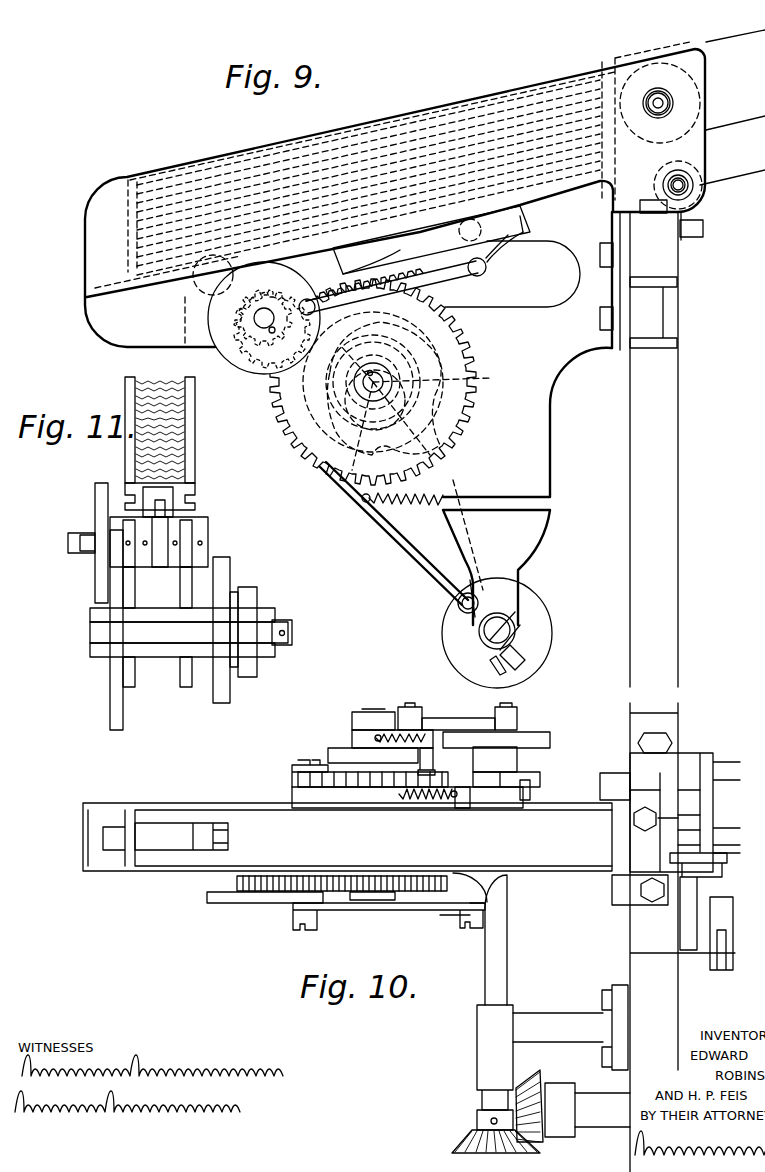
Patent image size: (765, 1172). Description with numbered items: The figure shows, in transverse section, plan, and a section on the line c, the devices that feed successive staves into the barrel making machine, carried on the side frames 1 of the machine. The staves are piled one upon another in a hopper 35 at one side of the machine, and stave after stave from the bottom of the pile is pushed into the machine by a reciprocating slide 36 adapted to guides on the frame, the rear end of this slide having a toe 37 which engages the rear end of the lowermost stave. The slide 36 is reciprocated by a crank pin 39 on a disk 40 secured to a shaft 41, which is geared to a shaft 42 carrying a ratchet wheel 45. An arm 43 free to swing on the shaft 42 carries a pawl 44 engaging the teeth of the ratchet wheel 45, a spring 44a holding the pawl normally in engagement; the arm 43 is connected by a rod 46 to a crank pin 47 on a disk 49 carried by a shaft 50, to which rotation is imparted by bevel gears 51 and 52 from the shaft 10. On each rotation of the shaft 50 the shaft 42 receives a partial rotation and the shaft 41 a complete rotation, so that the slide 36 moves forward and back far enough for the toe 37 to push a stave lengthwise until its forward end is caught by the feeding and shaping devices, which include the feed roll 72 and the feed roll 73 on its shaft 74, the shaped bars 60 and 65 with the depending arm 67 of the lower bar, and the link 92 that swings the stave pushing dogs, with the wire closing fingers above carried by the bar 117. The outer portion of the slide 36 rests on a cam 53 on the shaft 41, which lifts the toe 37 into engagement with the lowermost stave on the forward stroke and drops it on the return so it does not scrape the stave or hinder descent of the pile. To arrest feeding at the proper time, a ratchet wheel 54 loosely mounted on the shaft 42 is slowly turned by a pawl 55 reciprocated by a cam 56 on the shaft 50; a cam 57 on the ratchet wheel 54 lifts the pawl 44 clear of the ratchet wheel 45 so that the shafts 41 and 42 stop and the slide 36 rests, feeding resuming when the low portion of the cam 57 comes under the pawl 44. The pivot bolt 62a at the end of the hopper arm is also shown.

In FIG. 9, the side frames 1 is at (562, 443).
In FIG. 10, the side frames 1 is at (670, 937).
In FIG. 10, the shaft 10 is at (595, 1098).
In FIG. 9, the hopper 35 is at (395, 112).
In FIG. 10, the hopper 35 is at (347, 837).
In FIG. 11, the hopper 35 is at (196, 446).
In FIG. 9, the reciprocating slide 36 is at (525, 224).
In FIG. 10, the reciprocating slide 36 is at (508, 888).
In FIG. 11, the reciprocating slide 36 is at (175, 510).
In FIG. 9, the toe 37 is at (178, 300).
In FIG. 10, the toe 37 is at (193, 838).
In FIG. 11, the toe 37 is at (196, 492).
In FIG. 9, the crank pin 39 is at (452, 275).
In FIG. 10, the crank pin 39 is at (415, 910).
In FIG. 9, the disk 40 is at (215, 322).
In FIG. 10, the disk 40 is at (228, 903).
In FIG. 11, the disk 40 is at (96, 497).
In FIG. 9, the shaft 41 is at (262, 328).
In FIG. 11, the shaft 41 is at (208, 545).
In FIG. 9, the shaft 42 is at (381, 378).
In FIG. 10, the shaft 42 is at (375, 712).
In FIG. 11, the shaft 42 is at (90, 632).
In FIG. 9, the arm 43 is at (366, 382).
In FIG. 10, the arm 43 is at (352, 738).
In FIG. 9, the pawl 44 is at (470, 405).
In FIG. 10, the pawl 44 is at (433, 760).
In FIG. 10, the spring 44a is at (400, 736).
In FIG. 9, the ratchet wheel 45 is at (375, 406).
In FIG. 10, the ratchet wheel 45 is at (328, 755).
In FIG. 11, the ratchet wheel 45 is at (250, 588).
In FIG. 9, the rod 46 is at (450, 522).
In FIG. 10, the rod 46 is at (435, 720).
In FIG. 9, the crank pin 47 is at (505, 670).
In FIG. 10, the crank pin 47 is at (517, 715).
In FIG. 9, the disk 49 is at (552, 634).
In FIG. 10, the disk 49 is at (550, 740).
In FIG. 9, the shaft 50 is at (515, 625).
In FIG. 10, the shaft 50 is at (480, 726).
In FIG. 9, the bevel gear 51 is at (373, 382).
In FIG. 10, the bevel gear 51 is at (468, 1138).
In FIG. 10, the bevel gear 52 is at (538, 1075).
In FIG. 9, the cam 53 is at (245, 316).
In FIG. 11, the cam 53 is at (160, 568).
In FIG. 9, the ratchet wheel 54 is at (478, 380).
In FIG. 10, the ratchet wheel 54 is at (378, 788).
In FIG. 11, the ratchet wheel 54 is at (220, 704).
In FIG. 9, the pawl 55 is at (400, 562).
In FIG. 10, the pawl 55 is at (540, 778).
In FIG. 9, the cam 56 is at (524, 655).
In FIG. 10, the cam 56 is at (530, 790).
In FIG. 10, the cam 57 is at (292, 768).
In FIG. 11, the cam 57 is at (236, 592).
In FIG. 9, the bar 60 is at (714, 74).
In FIG. 9, the pivot bolt 62a is at (658, 97).
In FIG. 9, the bar 65 is at (705, 165).
In FIG. 9, the depending arm 67 is at (700, 212).
In FIG. 9, the feed roll 72 is at (692, 110).
In FIG. 9, the feed roll 73 is at (695, 185).
In FIG. 9, the shaft 74 is at (662, 185).
In FIG. 10, the link 92 is at (733, 926).
In FIG. 10, the bar 117 is at (725, 866).
In FIG. 9, the section line c— c is at (318, 132).